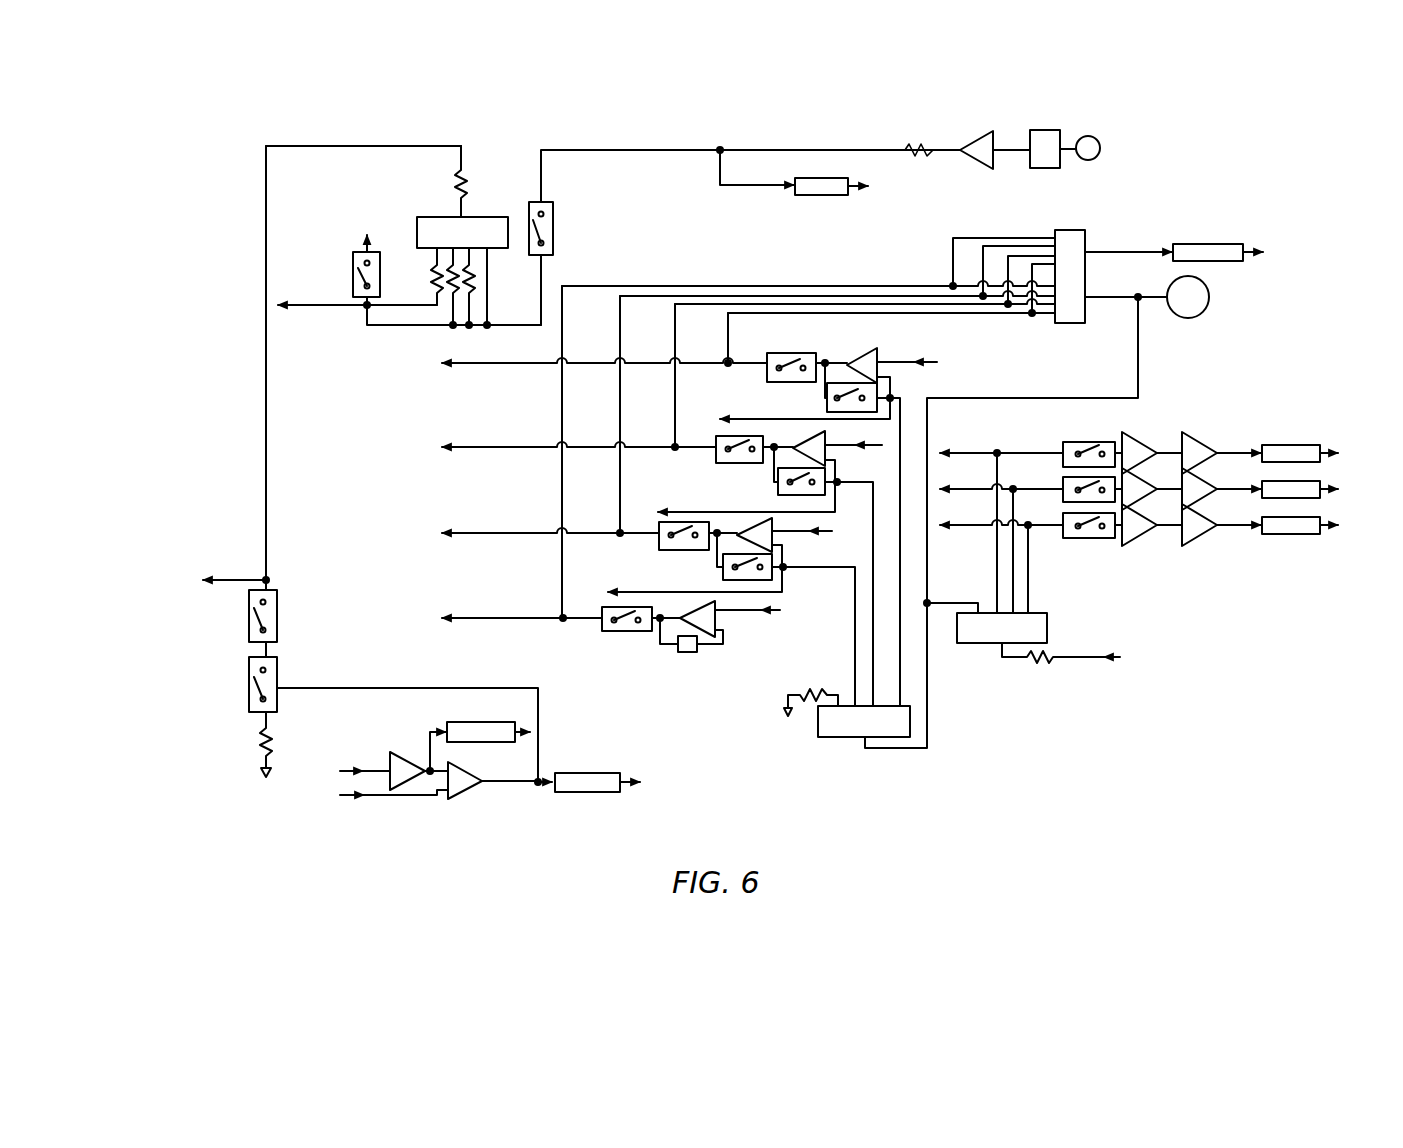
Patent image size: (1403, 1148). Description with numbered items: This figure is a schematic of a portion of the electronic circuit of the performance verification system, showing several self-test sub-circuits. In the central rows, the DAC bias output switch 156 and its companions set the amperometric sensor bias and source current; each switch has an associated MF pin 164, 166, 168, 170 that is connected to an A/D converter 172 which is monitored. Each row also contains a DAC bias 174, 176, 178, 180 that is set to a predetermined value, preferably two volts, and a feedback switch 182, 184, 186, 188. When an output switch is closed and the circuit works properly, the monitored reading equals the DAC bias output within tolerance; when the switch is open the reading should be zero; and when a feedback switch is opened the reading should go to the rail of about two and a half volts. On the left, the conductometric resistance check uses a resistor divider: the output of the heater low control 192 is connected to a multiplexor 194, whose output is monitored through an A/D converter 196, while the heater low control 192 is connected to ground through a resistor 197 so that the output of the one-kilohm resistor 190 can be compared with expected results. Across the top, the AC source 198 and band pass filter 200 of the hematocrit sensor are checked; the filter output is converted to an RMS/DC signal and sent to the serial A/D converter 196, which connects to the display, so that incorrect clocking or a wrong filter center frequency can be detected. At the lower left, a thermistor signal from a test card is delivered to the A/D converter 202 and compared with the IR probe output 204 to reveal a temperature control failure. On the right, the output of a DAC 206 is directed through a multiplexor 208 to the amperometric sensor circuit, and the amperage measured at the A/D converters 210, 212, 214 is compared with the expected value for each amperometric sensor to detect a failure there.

The DAC bias output switch 156 is at (797, 353).
The MF pin 164 is at (750, 361).
The MF pin 166 is at (697, 446).
The MF pin 168 is at (644, 531).
The MF pin 170 is at (577, 606).
The A/D converter 172 is at (1205, 244).
The DAC bias 174 is at (900, 362).
The DAC bias 176 is at (850, 448).
The DAC bias 178 is at (805, 533).
The DAC bias 180 is at (742, 612).
The feedback switch 182 is at (827, 407).
The feedback switch 184 is at (778, 490).
The feedback switch 186 is at (723, 573).
The feedback switch 188 is at (690, 653).
The resistor 190 is at (466, 173).
The heater low control 192 is at (284, 613).
The multiplexor 194 is at (473, 216).
The A/D converter 196 is at (817, 196).
The resistor 197 is at (260, 740).
The AC source 198 is at (1100, 138).
The band pass filter 200 is at (1052, 128).
The A/D converter 202 is at (590, 772).
The IR probe output 204 is at (362, 770).
The DAC 206 is at (1080, 656).
The multiplexor 208 is at (1038, 613).
The A/D converter 210 is at (1280, 449).
The A/D converter 212 is at (1320, 486).
The A/D converter 214 is at (1283, 536).